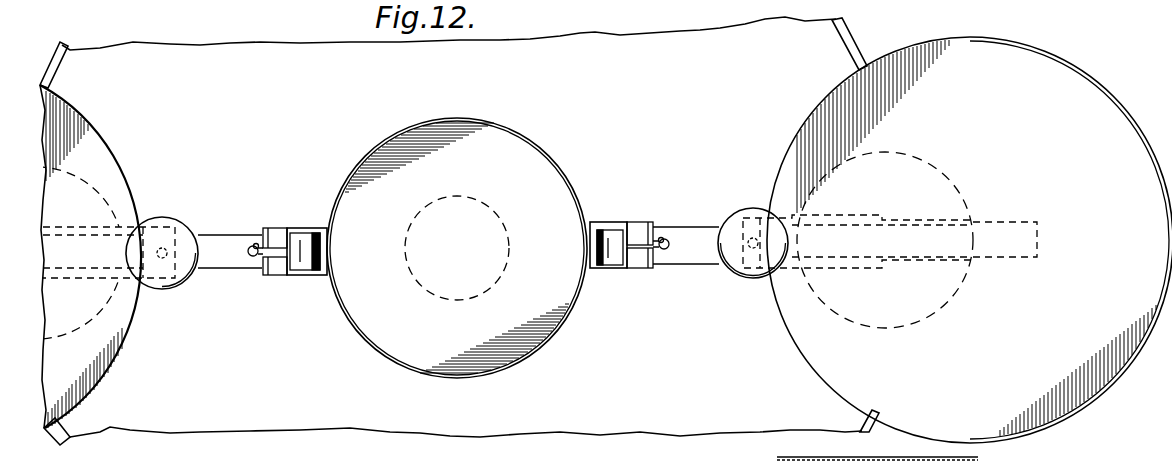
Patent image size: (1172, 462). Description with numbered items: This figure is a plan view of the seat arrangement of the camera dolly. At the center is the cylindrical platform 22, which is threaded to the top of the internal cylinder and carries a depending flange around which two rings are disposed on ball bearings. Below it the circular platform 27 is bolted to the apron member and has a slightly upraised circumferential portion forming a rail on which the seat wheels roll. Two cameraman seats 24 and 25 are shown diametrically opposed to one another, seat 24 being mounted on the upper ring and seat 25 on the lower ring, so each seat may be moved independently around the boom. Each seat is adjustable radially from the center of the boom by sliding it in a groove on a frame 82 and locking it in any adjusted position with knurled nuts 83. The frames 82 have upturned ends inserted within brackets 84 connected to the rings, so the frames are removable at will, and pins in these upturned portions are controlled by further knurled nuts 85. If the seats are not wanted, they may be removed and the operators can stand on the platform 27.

The cylindrical platform 22 is at (463, 147).
The cameraman seat 24 is at (95, 135).
The cameraman seat 25 is at (955, 48).
The circular platform 27 is at (683, 50).
The frame 82 is at (221, 217).
The knurled nut 83 is at (182, 204).
The bracket 84 is at (297, 232).
The nut 85 is at (252, 245).